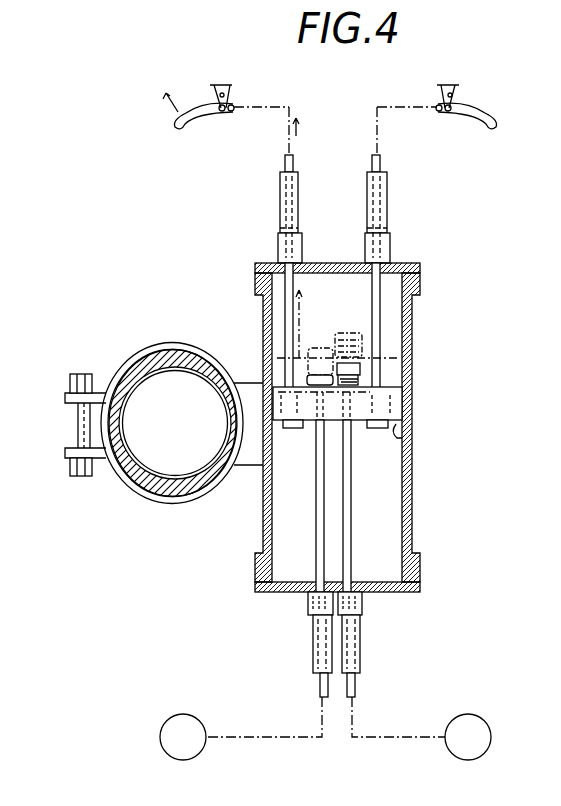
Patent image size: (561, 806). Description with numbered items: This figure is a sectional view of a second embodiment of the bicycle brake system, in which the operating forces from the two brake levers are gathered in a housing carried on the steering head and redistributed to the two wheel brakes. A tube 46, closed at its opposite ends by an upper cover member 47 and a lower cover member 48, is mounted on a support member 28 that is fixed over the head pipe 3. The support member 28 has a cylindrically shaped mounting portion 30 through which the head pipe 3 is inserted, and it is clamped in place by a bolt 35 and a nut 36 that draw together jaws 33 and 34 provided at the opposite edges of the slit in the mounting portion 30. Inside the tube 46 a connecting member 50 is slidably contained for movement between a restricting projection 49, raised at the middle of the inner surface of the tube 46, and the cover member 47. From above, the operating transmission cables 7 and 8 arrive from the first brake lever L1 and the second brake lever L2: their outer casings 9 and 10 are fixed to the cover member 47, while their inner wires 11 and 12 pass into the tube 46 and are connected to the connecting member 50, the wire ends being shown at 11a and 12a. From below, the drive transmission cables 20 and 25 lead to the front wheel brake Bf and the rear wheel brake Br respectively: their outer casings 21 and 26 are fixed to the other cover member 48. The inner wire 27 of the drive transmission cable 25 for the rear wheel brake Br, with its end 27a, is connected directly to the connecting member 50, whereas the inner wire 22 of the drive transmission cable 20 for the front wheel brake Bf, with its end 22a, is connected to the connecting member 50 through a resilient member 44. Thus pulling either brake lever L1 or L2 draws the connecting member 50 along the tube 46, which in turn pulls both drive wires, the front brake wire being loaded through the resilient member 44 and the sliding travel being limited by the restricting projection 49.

The head pipe 3 is at (149, 486).
The operating transmission cable 7 is at (260, 185).
The operating transmission cable 8 is at (406, 185).
The outer casing 9 is at (273, 217).
The outer casing 10 is at (413, 154).
The inner wire 11 is at (284, 166).
The inner wire 12 is at (381, 165).
The rear inner wire end 11a is at (295, 430).
The front inner wire end 12a is at (380, 430).
The drive transmission cable 20 is at (392, 664).
The outer casing 21 is at (361, 655).
The inner wire 22 is at (356, 684).
The front output wire end 22a is at (350, 363).
The drive transmission cable 25 is at (270, 664).
The outer casing 26 is at (313, 655).
The inner wire 27 is at (267, 705).
The rear output wire end 27a is at (313, 382).
The support member 28 is at (142, 412).
The mounting portion 30 is at (192, 496).
The jaw 33 is at (98, 459).
The jaw 34 is at (97, 392).
The bolt 35 is at (78, 428).
The nut 36 is at (70, 383).
The resilient member 44 is at (361, 381).
The tube 46 is at (407, 472).
The cover member 47 is at (405, 263).
The cover member 48 is at (388, 592).
The restricting projection 49 is at (398, 432).
The connecting member 50 is at (395, 408).
The first brake lever L1 is at (226, 120).
The second brake lever L2 is at (442, 123).
The rear wheel brake Br is at (183, 737).
The front wheel brake Bf is at (468, 737).